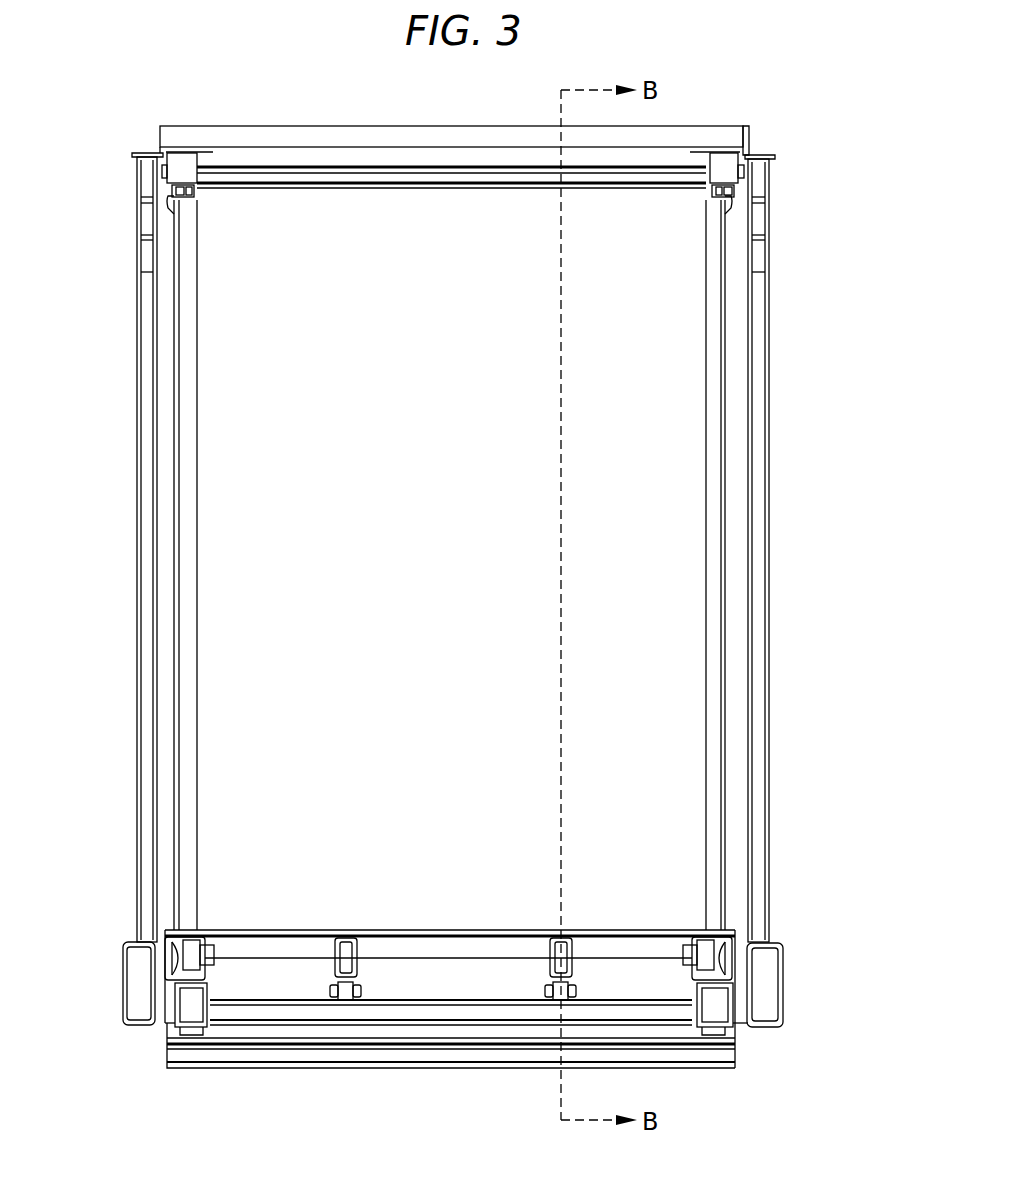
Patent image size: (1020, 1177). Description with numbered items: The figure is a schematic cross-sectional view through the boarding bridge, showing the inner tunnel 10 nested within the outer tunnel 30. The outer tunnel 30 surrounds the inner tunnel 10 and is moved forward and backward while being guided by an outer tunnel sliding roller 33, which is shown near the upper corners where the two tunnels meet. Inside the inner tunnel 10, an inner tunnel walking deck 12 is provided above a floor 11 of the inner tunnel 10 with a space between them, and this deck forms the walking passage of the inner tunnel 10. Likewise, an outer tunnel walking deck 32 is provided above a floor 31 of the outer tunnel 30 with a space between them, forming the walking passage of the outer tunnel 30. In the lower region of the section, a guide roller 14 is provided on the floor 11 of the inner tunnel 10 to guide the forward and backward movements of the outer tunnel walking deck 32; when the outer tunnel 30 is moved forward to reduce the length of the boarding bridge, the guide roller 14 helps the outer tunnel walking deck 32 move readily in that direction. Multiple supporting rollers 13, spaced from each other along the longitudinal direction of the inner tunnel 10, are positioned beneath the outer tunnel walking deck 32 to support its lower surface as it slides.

The outer tunnel 30 is at (785, 548).
The inner tunnel 10 is at (745, 624).
The outer tunnel sliding roller 33 is at (185, 168).
The inner tunnel walking deck 12 is at (640, 931).
The outer tunnel walking deck 32 is at (662, 948).
The floor 11 is at (652, 1012).
The floor 31 is at (627, 1052).
The supporting roller 13 is at (552, 995).
The guide roller 14 is at (205, 955).